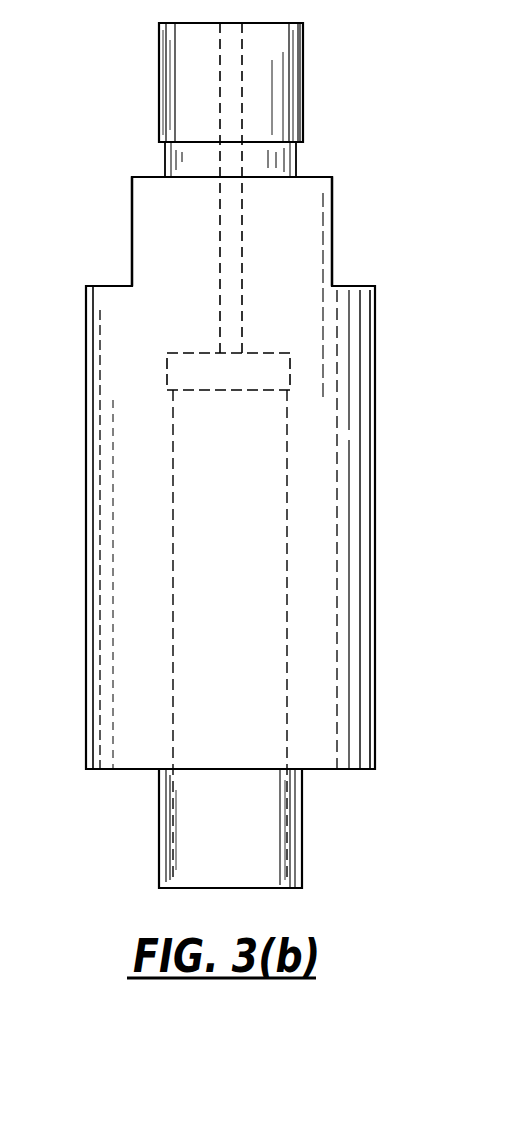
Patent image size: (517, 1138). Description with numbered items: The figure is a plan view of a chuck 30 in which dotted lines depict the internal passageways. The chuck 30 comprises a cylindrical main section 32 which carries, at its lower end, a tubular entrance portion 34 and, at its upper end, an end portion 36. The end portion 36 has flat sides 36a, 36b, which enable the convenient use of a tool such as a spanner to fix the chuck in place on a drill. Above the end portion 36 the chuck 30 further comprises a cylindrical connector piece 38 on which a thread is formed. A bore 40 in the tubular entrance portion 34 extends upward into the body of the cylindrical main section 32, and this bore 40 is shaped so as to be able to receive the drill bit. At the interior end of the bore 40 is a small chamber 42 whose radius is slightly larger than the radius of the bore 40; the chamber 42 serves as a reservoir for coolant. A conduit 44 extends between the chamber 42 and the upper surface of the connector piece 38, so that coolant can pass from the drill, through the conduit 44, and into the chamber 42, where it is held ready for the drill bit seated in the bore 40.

The chuck 30 is at (126, 812).
The cylindrical main section 32 is at (112, 597).
The tubular entrance portion 34 is at (296, 827).
The end portion 36 is at (166, 203).
The flat side 36a is at (132, 229).
The flat side 36b is at (331, 234).
The cylindrical connector piece 38 is at (303, 89).
The bore 40 is at (272, 888).
The chamber 42 is at (170, 370).
The conduit 44 is at (232, 213).